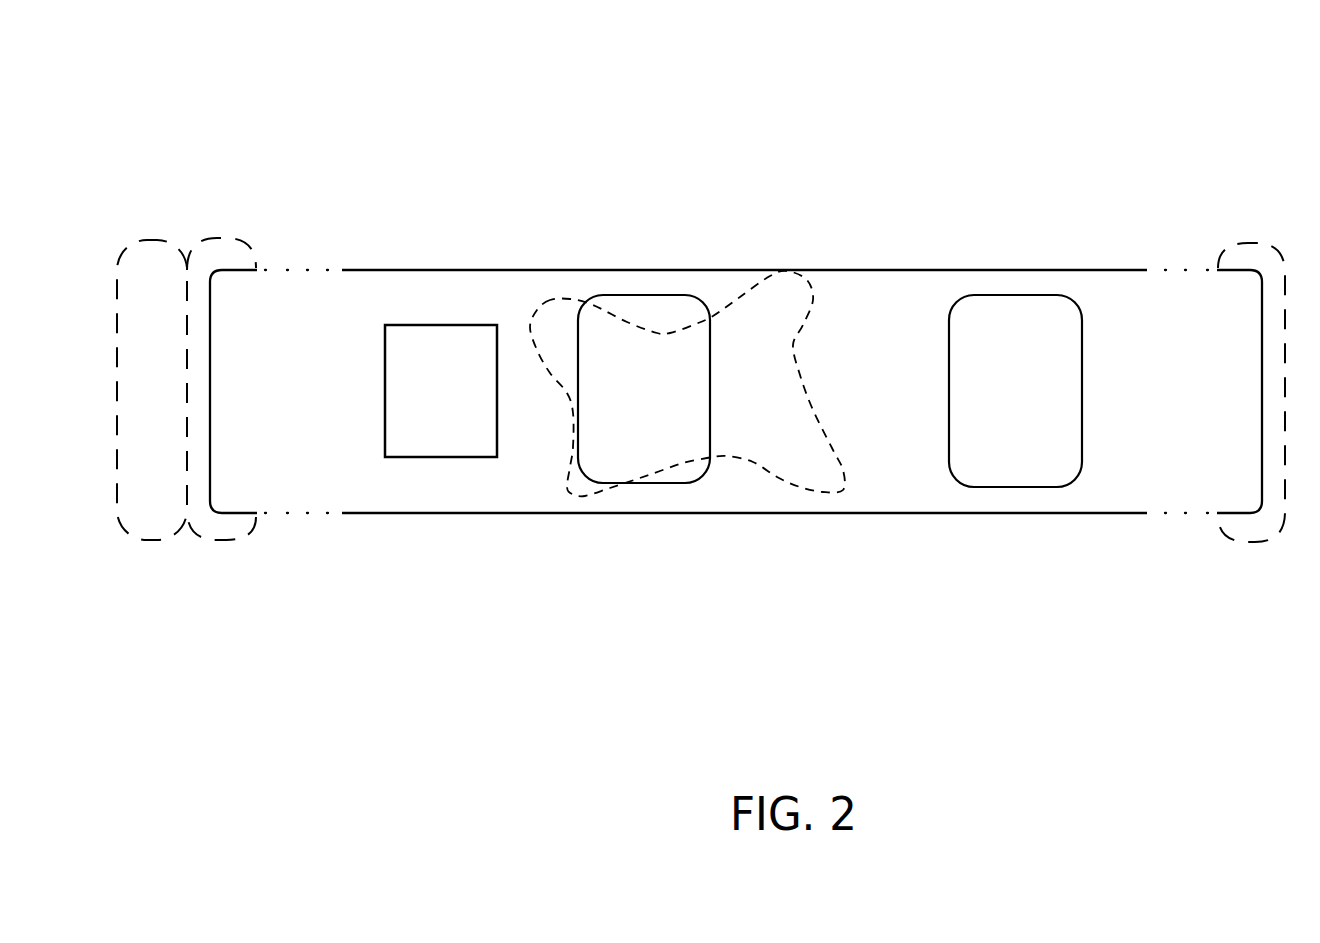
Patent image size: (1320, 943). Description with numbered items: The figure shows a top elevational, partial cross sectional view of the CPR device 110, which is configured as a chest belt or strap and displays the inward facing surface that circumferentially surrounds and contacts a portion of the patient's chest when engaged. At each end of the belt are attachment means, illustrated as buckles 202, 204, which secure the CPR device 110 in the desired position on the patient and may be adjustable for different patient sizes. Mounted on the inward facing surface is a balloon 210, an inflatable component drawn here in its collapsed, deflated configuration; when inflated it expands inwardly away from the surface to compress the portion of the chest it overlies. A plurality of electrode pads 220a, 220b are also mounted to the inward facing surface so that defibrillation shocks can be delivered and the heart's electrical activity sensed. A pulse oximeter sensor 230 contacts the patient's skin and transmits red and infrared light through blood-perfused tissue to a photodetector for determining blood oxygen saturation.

The CPR device 110 is at (252, 91).
The buckle 202 is at (166, 293).
The buckle 204 is at (1256, 250).
The balloon 210 is at (536, 305).
The electrode pad 220a is at (616, 288).
The electrode pad 220b is at (995, 296).
The pulse oximeter sensor 230 is at (425, 440).